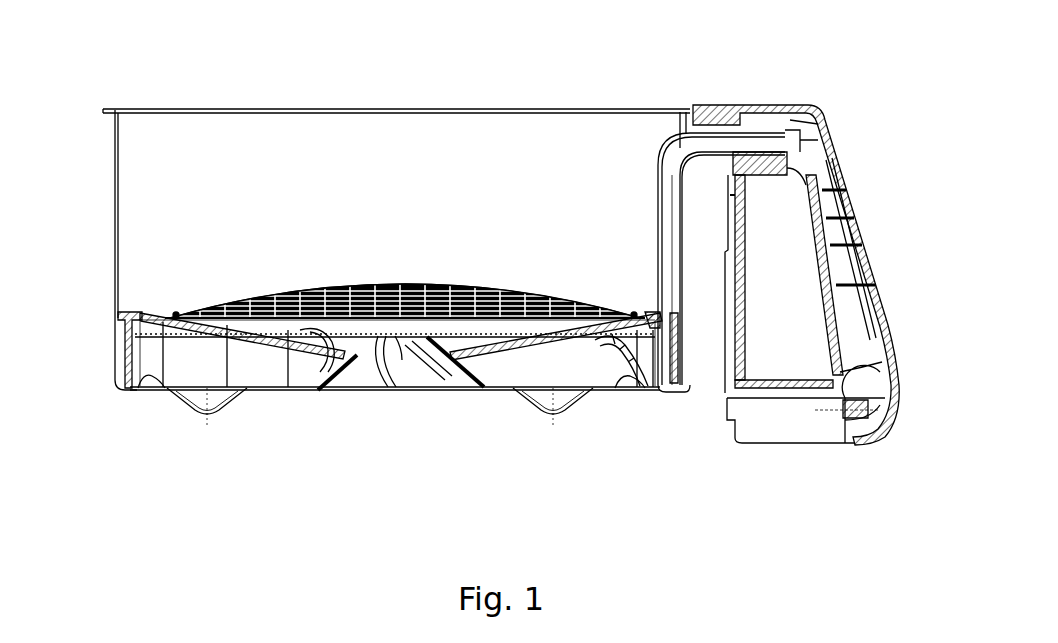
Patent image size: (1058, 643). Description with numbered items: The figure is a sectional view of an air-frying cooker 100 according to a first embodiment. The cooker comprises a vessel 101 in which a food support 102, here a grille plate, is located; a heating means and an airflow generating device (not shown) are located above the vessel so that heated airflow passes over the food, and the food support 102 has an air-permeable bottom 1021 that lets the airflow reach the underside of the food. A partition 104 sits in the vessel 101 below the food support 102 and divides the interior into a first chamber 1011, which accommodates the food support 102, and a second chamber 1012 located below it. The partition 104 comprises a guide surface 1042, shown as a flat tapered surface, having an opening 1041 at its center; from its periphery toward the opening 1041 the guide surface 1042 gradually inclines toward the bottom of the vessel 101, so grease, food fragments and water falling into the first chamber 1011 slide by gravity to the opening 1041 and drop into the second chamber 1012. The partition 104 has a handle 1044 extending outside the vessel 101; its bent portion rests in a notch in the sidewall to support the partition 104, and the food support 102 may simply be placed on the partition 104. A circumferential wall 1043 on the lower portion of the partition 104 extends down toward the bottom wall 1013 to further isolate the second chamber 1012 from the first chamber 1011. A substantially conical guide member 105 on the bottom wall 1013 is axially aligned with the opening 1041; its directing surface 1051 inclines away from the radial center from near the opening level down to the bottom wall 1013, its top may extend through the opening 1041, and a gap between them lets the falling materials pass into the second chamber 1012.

The air-frying cooker 100 is at (784, 58).
The vessel 101 is at (115, 175).
The first chamber 1011 is at (266, 128).
The second chamber 1012 is at (258, 365).
The bottom wall 1013 is at (508, 392).
The food support 102 is at (225, 300).
The air-permeable bottom 1021 is at (460, 287).
The circumferential wall 1043 is at (125, 345).
The partition 104 is at (198, 330).
The opening 1041 is at (357, 347).
The guide surface 1042 is at (578, 332).
The handle 1044 is at (848, 243).
The guide member 105 is at (410, 357).
The directing surface 1051 is at (442, 375).